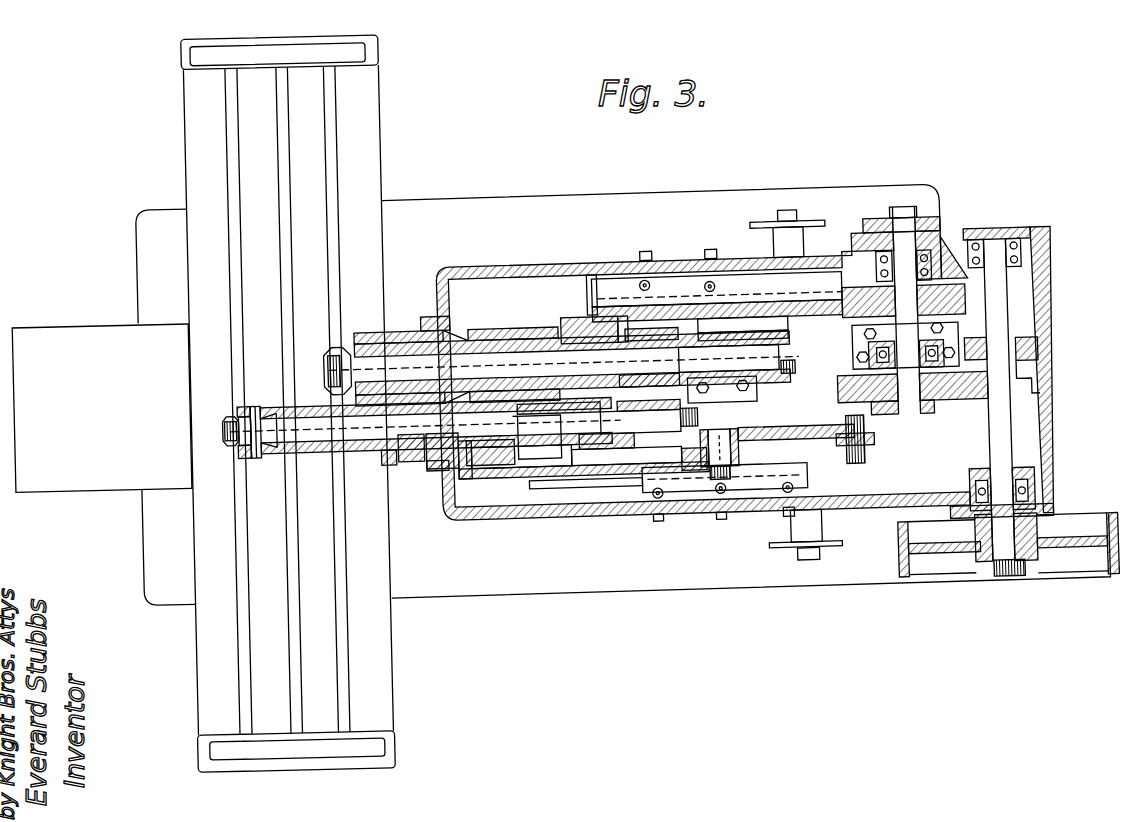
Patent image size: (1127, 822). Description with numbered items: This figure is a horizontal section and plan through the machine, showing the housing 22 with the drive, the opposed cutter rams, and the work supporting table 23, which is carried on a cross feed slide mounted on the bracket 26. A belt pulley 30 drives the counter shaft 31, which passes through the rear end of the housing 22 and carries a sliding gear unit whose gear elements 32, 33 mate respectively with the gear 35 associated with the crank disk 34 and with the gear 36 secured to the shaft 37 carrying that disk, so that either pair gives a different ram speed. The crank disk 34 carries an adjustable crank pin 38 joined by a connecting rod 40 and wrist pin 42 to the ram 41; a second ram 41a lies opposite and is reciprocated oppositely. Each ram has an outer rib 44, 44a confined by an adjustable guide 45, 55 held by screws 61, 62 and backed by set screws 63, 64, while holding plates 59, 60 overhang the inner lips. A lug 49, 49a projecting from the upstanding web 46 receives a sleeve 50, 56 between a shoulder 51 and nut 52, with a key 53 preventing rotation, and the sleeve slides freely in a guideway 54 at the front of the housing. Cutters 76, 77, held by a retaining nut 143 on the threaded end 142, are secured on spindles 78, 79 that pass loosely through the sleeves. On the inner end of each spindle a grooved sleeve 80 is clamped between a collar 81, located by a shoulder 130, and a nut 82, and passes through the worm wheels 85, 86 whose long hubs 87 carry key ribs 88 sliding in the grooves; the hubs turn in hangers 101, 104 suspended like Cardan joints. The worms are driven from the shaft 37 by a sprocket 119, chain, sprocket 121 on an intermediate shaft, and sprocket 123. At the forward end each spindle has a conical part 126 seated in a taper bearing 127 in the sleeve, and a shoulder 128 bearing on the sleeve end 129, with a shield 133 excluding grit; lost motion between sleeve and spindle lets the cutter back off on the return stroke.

The housing 22 is at (576, 270).
The work supporting table 23 is at (198, 149).
The bracket 26 is at (50, 323).
The belt pulley 30 is at (1096, 534).
The counter shaft 31 is at (1004, 446).
The gear element 32 is at (1030, 399).
The gear element 33 is at (1032, 364).
The crank disk 34 is at (940, 429).
The gear 35 is at (841, 373).
The gear 36 is at (968, 312).
The shaft 37 is at (910, 415).
The crank pin 38 is at (860, 464).
The connecting rod 40 is at (779, 426).
The ram 41 is at (601, 476).
The second ram 41a is at (782, 352).
The wrist pin 42 is at (735, 441).
The outer rib 44 is at (543, 478).
The outer rib 44a is at (833, 318).
The guide 45 is at (788, 477).
The upstanding web 46 is at (583, 476).
The lug 49 is at (478, 397).
The lug 49a is at (566, 372).
The sleeve 50 is at (398, 450).
The shoulder 51 is at (457, 437).
The nut 52 is at (511, 436).
The key 53 is at (594, 279).
The guideway 54 is at (381, 460).
The guide 55 is at (798, 312).
The sleeve 56 is at (480, 346).
The holding plate 59 is at (575, 400).
The holding plate 60 is at (722, 389).
The screw 61 is at (652, 498).
The screw 62 is at (663, 308).
The set screw 63 is at (652, 518).
The set screw 64 is at (652, 268).
The cutter 76 is at (236, 452).
The cutter 77 is at (347, 339).
The spindle 78 is at (312, 425).
The spindle 79 is at (409, 358).
The sleeve 80 is at (732, 340).
The collar 81 is at (526, 382).
The nut 82 is at (698, 432).
The worm wheel 85 is at (678, 484).
The worm wheel 86 is at (627, 342).
The hub 87 is at (660, 350).
The key rib 88 is at (654, 340).
The hanger 101 is at (683, 314).
The hanger 104 is at (633, 477).
The sprocket 119 is at (945, 233).
The sprocket 121 is at (827, 233).
The sprocket 123 is at (826, 548).
The conical part 126 is at (271, 423).
The taper bearing 127 is at (265, 399).
The shoulder 128 is at (248, 453).
The end of the sleeve 129 is at (261, 423).
The shoulder 130 is at (511, 419).
The shield 133 is at (262, 401).
The threaded end 142 is at (221, 422).
The retaining nut 143 is at (220, 440).